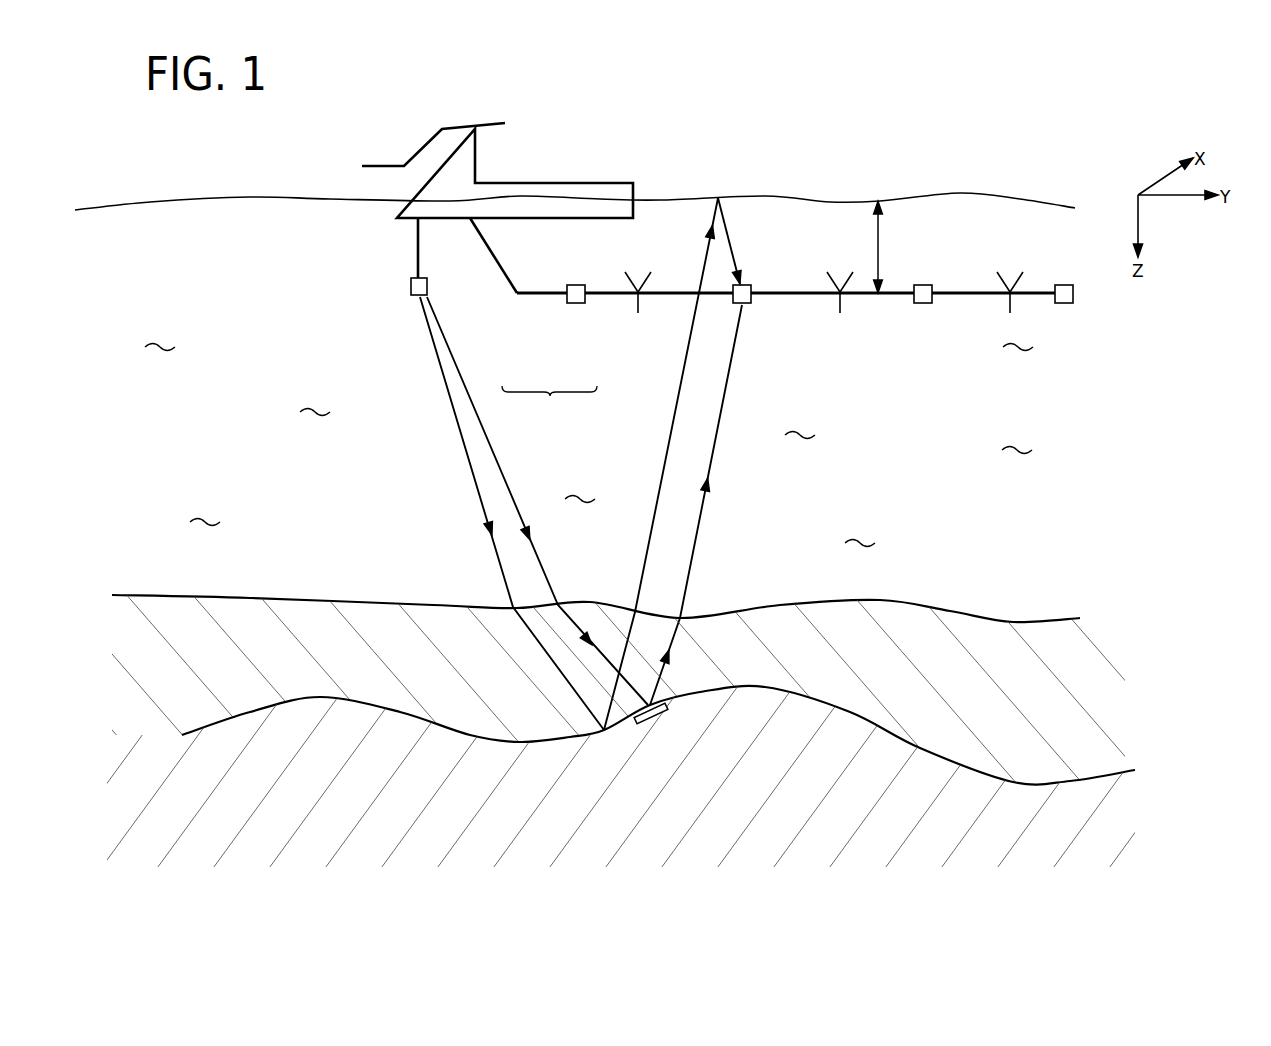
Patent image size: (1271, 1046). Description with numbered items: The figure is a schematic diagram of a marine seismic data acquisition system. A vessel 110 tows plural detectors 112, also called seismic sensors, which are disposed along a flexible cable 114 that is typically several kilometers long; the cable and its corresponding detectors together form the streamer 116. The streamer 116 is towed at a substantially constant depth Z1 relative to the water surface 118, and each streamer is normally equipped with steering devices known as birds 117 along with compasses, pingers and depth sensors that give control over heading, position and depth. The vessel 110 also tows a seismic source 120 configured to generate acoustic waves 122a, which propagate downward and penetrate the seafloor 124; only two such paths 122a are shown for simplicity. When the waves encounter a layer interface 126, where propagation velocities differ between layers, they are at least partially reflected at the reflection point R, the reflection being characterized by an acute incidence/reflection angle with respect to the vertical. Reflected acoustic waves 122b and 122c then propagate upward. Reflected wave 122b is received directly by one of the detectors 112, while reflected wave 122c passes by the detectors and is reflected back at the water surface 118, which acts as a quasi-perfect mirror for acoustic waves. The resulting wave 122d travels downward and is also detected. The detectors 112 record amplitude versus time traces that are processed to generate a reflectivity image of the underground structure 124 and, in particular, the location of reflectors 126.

The vessel 110 is at (420, 158).
The detectors 112 is at (577, 303).
The flexible cable 114 is at (552, 298).
The streamer 116 is at (549, 406).
The depth control device (bird) 117 is at (1012, 302).
The water surface 118 is at (764, 196).
The seismic source 120 is at (410, 285).
The acoustic waves 122a is at (488, 448).
The reflected acoustic wave 122b is at (698, 545).
The reflected acoustic wave 122c is at (666, 460).
The wave 122d is at (731, 235).
The seafloor 124 is at (918, 602).
The layer interface 126 is at (1095, 778).
The reflection point R is at (639, 721).
The depth Z1 is at (879, 247).